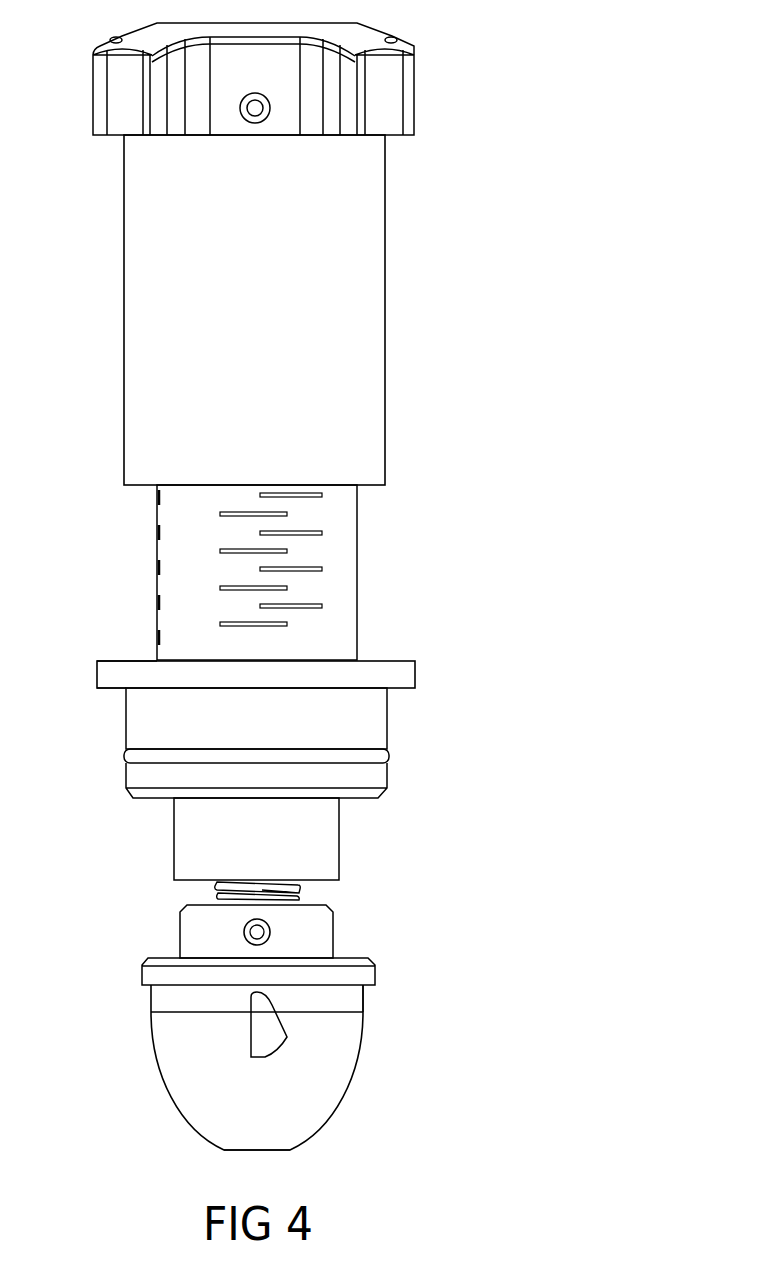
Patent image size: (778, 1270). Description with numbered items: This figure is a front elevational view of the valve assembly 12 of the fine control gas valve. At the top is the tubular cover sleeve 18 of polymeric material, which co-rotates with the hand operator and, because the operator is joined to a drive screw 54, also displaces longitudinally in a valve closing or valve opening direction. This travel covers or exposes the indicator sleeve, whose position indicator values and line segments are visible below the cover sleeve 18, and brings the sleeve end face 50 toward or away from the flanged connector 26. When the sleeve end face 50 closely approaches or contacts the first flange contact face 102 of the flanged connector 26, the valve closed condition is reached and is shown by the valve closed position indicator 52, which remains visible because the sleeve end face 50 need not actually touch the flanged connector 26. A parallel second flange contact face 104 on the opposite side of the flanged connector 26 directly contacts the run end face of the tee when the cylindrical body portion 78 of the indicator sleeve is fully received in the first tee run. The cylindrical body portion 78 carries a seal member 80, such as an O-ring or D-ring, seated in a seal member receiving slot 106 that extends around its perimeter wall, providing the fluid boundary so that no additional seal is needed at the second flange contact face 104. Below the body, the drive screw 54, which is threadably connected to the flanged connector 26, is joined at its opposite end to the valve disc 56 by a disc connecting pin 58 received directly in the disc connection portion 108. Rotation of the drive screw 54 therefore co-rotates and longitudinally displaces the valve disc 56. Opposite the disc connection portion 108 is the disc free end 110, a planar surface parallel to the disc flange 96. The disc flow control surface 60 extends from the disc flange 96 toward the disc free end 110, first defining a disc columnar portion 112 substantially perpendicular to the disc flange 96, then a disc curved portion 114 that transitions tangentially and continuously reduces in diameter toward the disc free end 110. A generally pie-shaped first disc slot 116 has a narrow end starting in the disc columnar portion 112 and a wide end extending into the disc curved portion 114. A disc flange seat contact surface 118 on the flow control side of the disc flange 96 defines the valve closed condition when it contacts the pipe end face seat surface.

The valve assembly 12 is at (433, 510).
The cover sleeve 18 is at (142, 370).
The flanged connector 26 is at (405, 677).
The sleeve end face 50 is at (138, 487).
The valve closed position indicator 52 is at (308, 648).
The drive screw 54 is at (213, 892).
The valve disc 56 is at (440, 1050).
The disc connecting pin 58 is at (270, 933).
The disc flow control surface 60 is at (234, 1053).
The cylindrical body portion 78 is at (370, 717).
The seal member 80 is at (132, 753).
The disc flange 96 is at (347, 970).
The first flange contact face 102 is at (123, 658).
The second flange contact face 104 is at (108, 690).
The seal member receiving slot 106 is at (388, 762).
The disc connection portion 108 is at (182, 940).
The disc free end 110 is at (280, 1152).
The disc columnar portion 112 is at (148, 997).
The disc curved portion 114 is at (155, 1060).
The first disc slot 116 is at (253, 1043).
The disc flange seat contact surface 118 is at (368, 992).